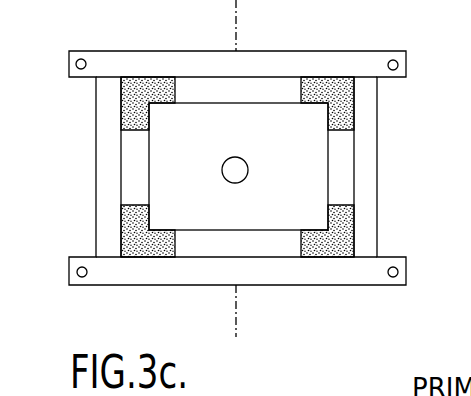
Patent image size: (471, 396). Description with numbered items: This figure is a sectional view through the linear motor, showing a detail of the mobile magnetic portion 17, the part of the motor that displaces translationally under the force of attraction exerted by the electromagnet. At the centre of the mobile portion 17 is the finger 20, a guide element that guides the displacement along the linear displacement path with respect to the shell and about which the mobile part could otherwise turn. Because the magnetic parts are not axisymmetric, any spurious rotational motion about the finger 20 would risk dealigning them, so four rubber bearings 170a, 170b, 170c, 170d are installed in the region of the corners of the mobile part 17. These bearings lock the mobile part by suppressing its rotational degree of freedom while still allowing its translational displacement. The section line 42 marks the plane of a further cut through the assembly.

The mobile magnetic portion 17 is at (308, 153).
The finger 20 is at (243, 182).
The section line 42 is at (235, 23).
The rubber bearing 170a is at (137, 100).
The rubber bearing 170b is at (352, 102).
The rubber bearing 170c is at (345, 226).
The rubber bearing 170d is at (142, 253).